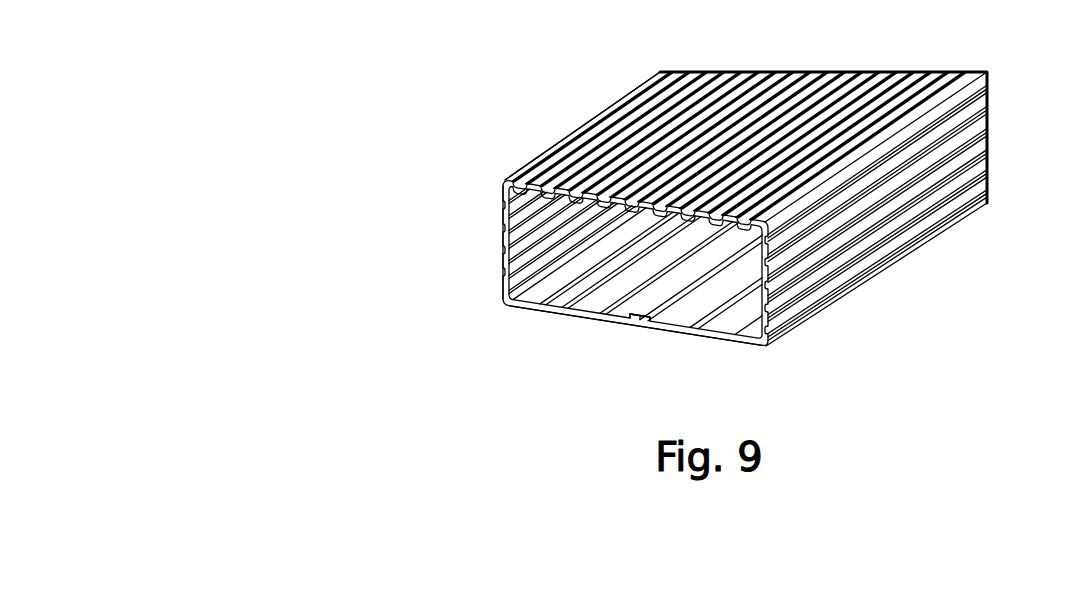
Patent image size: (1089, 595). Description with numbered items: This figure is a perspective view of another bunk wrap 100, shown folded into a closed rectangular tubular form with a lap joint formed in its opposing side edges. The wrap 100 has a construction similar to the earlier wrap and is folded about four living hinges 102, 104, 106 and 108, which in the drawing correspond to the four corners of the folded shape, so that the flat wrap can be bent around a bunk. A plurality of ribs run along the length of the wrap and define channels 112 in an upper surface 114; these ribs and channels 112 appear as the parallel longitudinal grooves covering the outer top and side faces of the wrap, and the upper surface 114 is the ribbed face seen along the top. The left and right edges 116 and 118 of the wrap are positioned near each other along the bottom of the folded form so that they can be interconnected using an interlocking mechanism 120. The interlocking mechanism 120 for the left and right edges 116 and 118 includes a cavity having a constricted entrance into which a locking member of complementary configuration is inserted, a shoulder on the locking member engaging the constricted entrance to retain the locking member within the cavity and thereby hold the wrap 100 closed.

The wrap 100 is at (455, 288).
The living hinge 102 is at (506, 180).
The living hinge 104 is at (990, 72).
The living hinge 106 is at (510, 306).
The living hinge 108 is at (768, 345).
The channels 112 is at (905, 77).
The upper surface 114 is at (677, 213).
The left edge 116 is at (756, 96).
The right edge 118 is at (640, 330).
The interlocking mechanism 120 is at (638, 330).